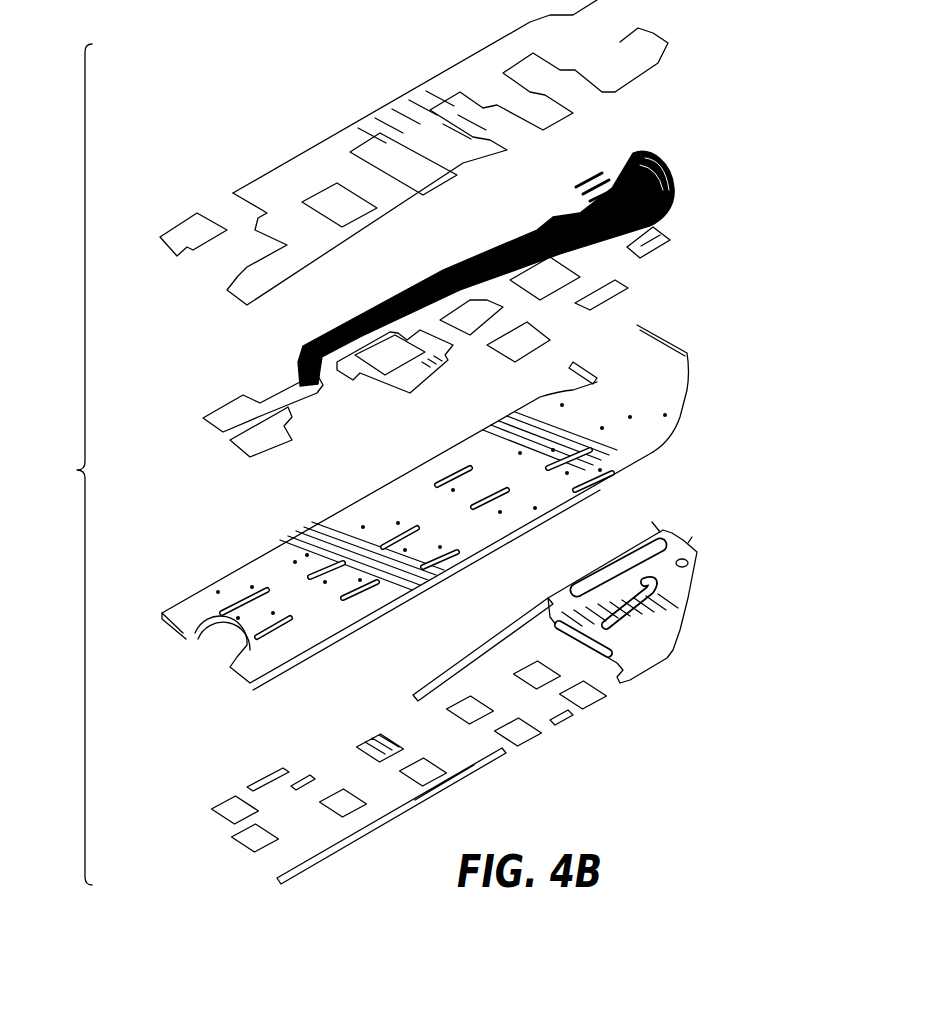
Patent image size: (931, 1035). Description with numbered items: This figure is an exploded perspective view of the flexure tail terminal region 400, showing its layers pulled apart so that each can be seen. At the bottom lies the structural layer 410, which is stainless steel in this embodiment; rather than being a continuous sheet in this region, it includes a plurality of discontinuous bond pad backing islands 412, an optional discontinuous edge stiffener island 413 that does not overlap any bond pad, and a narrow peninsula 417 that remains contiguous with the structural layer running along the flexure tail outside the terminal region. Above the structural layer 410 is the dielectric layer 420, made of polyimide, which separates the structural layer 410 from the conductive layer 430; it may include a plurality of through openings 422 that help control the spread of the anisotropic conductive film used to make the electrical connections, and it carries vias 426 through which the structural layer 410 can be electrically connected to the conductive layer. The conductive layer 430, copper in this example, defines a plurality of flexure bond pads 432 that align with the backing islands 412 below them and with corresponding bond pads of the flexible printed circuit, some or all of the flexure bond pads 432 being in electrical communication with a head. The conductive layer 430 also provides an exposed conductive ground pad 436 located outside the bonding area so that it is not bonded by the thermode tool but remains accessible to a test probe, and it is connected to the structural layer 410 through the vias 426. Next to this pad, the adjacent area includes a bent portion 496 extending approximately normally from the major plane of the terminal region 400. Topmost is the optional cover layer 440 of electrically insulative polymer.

The flexure tail terminal region 400 is at (61, 464).
The structural layer 410 is at (678, 597).
The bond pad backing islands 412 is at (538, 675).
The edge stiffener island 413 is at (413, 803).
The narrow peninsula 417 is at (440, 681).
The dielectric layer 420 is at (687, 383).
The through openings 422 is at (567, 470).
The vias 426 is at (632, 418).
The conductive layer 430 is at (678, 193).
The flexure bond pads 432 is at (590, 285).
The exposed conductive ground pad 436 is at (657, 237).
The cover layer 440 is at (668, 43).
The bent portion 496 is at (632, 545).